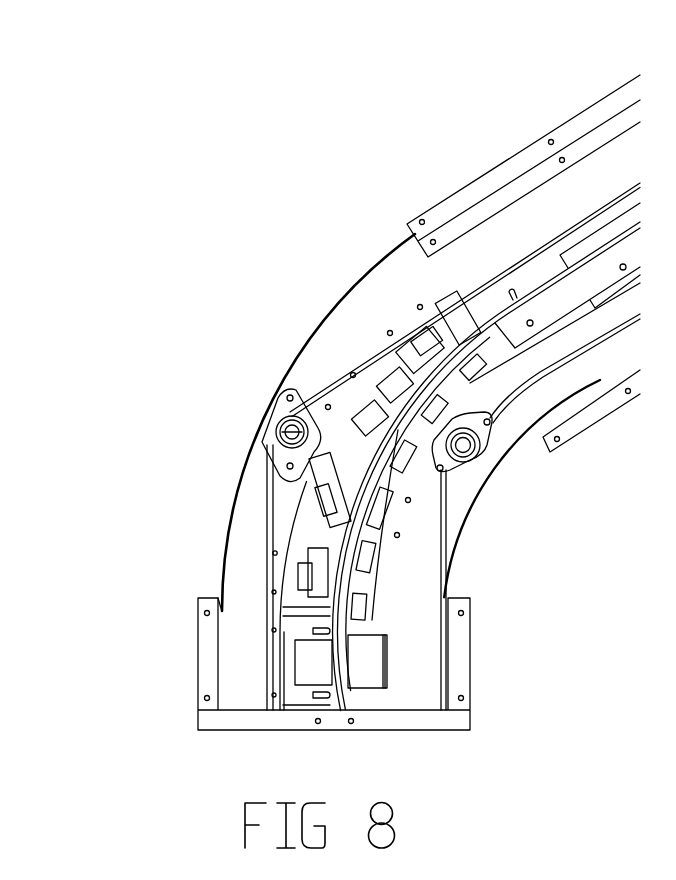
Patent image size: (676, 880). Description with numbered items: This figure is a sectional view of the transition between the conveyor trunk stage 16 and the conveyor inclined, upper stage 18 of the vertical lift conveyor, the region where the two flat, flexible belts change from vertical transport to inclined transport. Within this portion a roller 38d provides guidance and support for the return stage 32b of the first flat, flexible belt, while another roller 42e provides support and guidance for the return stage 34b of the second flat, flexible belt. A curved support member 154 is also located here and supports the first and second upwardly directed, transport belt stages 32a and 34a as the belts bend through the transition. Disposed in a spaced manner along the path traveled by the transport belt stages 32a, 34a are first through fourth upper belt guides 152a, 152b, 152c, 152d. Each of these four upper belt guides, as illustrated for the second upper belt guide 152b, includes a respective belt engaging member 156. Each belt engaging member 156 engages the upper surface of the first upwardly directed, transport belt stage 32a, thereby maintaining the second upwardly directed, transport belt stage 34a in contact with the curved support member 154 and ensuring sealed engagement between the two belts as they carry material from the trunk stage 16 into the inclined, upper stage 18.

The conveyor trunk stage 16 is at (133, 670).
The conveyor inclined, upper stage 18 is at (480, 97).
The first upwardly directed, transport belt stage 32a is at (487, 325).
The return stage of the first flat, flexible belt 32b is at (267, 565).
The second upwardly directed, transport belt stage 34a is at (460, 358).
The return stage of the second flat, flexible belt 34b is at (443, 525).
The roller 38d is at (262, 432).
The roller 42e is at (466, 446).
The first upper belt guide 152a is at (307, 588).
The second upper belt guide 152b is at (310, 498).
The third upper belt guide 152c is at (355, 425).
The fourth upper belt guide 152d is at (405, 348).
The curved support member 154 is at (355, 568).
The belt engaging member 156 is at (292, 432).